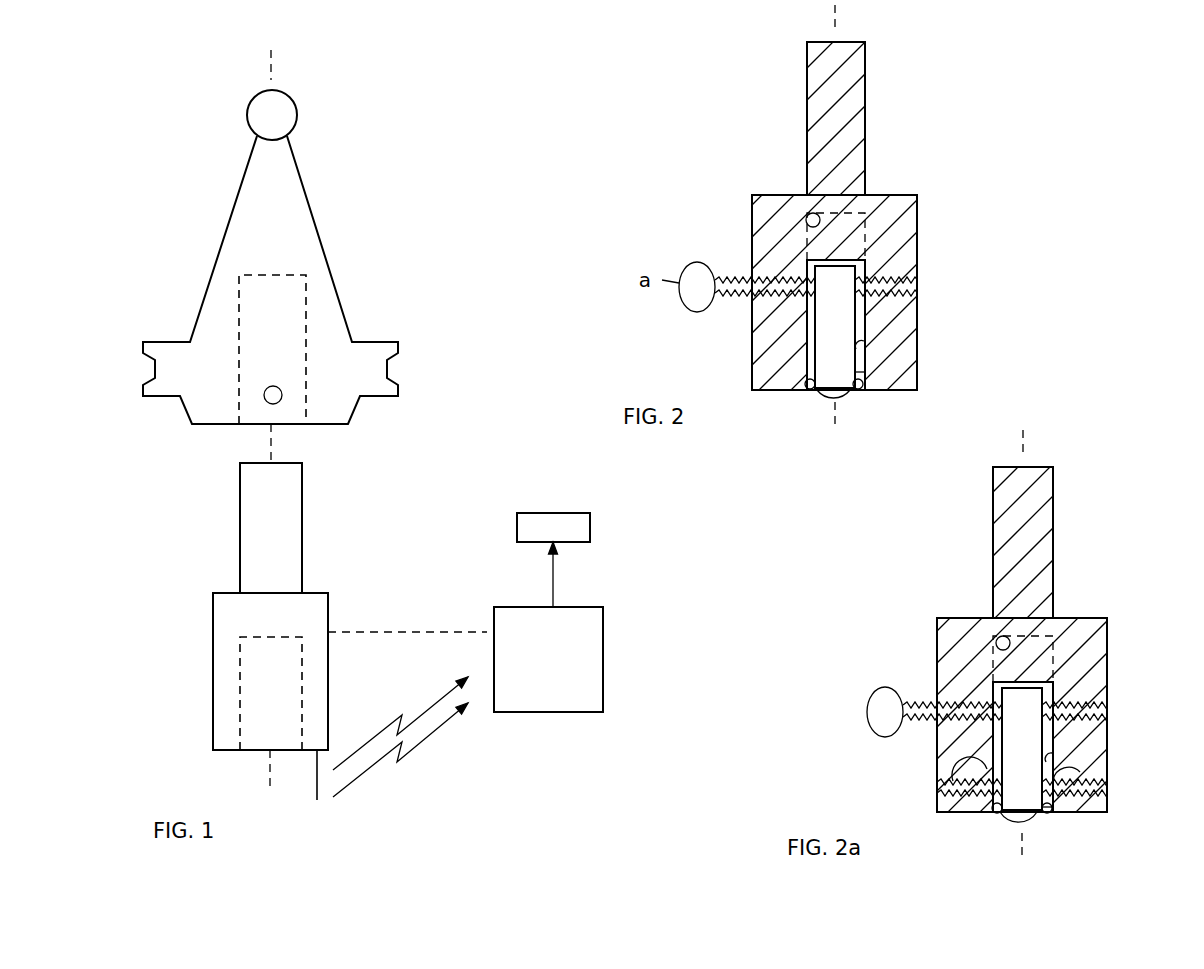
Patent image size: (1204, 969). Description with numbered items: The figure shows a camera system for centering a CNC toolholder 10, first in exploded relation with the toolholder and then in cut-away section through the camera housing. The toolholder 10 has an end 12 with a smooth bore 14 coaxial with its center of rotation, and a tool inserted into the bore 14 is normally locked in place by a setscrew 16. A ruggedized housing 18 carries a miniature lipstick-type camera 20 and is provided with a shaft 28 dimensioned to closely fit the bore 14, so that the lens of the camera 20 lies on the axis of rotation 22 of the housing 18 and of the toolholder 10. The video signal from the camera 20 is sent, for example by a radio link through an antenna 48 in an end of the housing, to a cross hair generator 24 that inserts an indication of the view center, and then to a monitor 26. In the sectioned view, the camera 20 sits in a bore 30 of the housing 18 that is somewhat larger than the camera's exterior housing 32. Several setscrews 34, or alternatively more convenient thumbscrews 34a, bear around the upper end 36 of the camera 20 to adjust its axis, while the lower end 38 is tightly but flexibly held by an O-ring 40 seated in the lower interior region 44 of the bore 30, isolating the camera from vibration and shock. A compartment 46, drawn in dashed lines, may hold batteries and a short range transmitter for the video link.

In FIG. 1, the toolholder 10 is at (206, 188).
In FIG. 1, the end 12 is at (210, 427).
In FIG. 1, the bore 14 is at (306, 287).
In FIG. 1, the setscrew 16 is at (282, 398).
In FIG. 1, the housing 18 is at (213, 625).
In FIG. 2, the housing 18 is at (893, 148).
In FIG. 2A, the housing 18 is at (1078, 567).
In FIG. 1, the camera 20 is at (242, 668).
In FIG. 2, the camera 20 is at (855, 320).
In FIG. 2A, the camera 20 is at (1042, 743).
In FIG. 1, the axis of rotation 22 is at (275, 63).
In FIG. 2, the axis of rotation 22 is at (838, 20).
In FIG. 2A, the axis of rotation 22 is at (1025, 445).
In FIG. 1, the cross hair generator 24 is at (603, 660).
In FIG. 1, the monitor 26 is at (590, 532).
In FIG. 1, the shaft 28 is at (302, 510).
In FIG. 2, the shaft 28 is at (865, 67).
In FIG. 2A, the shaft 28 is at (1053, 505).
In FIG. 2, the bore 30 is at (860, 351).
In FIG. 2A, the bore 30 is at (1047, 760).
In FIG. 2, the exterior housing 32 is at (815, 352).
In FIG. 2A, the exterior housing 32 is at (1002, 747).
In FIG. 2, the setscrews 34 is at (887, 277).
In FIG. 2A, the setscrews 34 is at (1060, 700).
In FIG. 2A, the thumbscrews 34a is at (877, 690).
In FIG. 2, the upper end 36 is at (866, 261).
In FIG. 2A, the upper end 36 is at (1040, 682).
In FIG. 2, the lower end 38 is at (823, 393).
In FIG. 2A, the lower end 38 is at (1020, 815).
In FIG. 2, the O-ring 40 is at (863, 390).
In FIG. 2A, the O-ring 40 is at (1050, 813).
In FIG. 2, the lower interior region 44 is at (865, 372).
In FIG. 2A, the lower interior region 44 is at (1052, 807).
In FIG. 2, the compartment 46 is at (792, 229).
In FIG. 2A, the compartment 46 is at (990, 650).
In FIG. 1, the antenna 48 is at (320, 792).